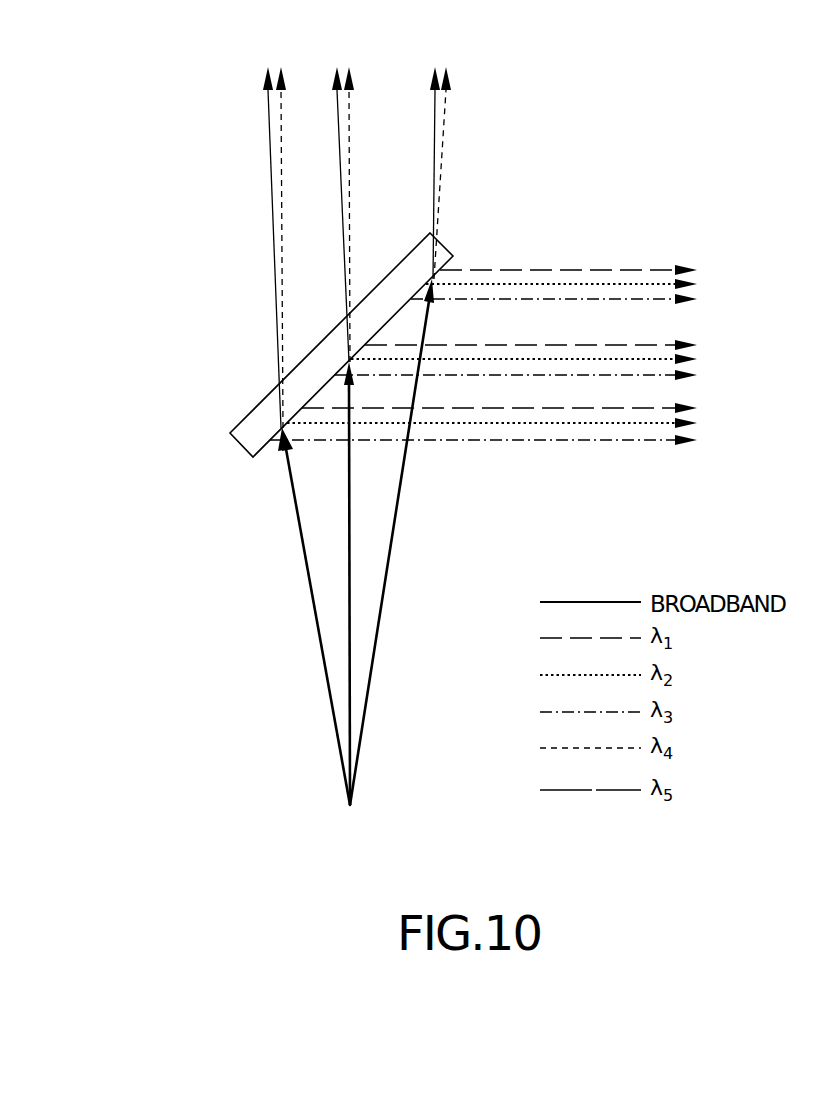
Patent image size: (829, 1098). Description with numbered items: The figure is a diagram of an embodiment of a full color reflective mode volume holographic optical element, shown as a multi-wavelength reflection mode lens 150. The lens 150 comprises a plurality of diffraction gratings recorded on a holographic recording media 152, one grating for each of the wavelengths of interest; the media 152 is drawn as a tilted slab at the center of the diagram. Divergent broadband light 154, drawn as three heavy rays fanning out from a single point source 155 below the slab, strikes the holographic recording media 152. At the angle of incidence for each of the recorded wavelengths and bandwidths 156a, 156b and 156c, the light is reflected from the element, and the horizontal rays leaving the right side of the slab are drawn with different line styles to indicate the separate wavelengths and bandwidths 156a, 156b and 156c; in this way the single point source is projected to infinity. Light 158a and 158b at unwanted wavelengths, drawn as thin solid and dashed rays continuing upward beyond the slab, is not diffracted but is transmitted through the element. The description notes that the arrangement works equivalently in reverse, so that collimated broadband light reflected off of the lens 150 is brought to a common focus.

The multi-wavelength reflection mode lens 150 is at (142, 259).
The holographic recording media 152 is at (443, 243).
The divergent broadband light 154 is at (340, 738).
The light source point 155 is at (362, 807).
The reflected wavelength and bandwidth 156a is at (526, 333).
The reflected wavelength and bandwidth 156b is at (519, 351).
The reflected wavelength and bandwidth 156c is at (510, 369).
The transmitted light at unwanted wavelengths 158a is at (266, 81).
The transmitted light at unwanted wavelengths 158b is at (282, 83).